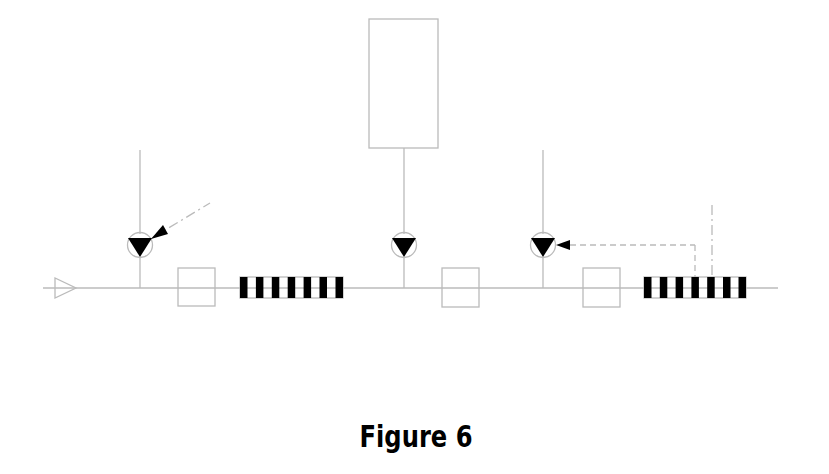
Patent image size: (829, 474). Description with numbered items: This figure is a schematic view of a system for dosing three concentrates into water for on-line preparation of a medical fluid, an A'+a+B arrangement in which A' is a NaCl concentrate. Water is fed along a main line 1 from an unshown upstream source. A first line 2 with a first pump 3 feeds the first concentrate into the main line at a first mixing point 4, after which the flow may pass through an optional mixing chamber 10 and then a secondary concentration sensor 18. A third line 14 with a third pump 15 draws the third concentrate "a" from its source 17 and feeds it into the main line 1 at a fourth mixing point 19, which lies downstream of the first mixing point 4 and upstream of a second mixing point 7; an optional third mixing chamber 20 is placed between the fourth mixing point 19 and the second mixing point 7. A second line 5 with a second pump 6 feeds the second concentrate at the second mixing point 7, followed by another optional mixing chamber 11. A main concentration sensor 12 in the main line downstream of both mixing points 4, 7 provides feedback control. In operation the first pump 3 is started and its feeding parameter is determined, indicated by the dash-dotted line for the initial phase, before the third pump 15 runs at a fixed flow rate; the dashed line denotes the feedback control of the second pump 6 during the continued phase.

The main line 1 is at (101, 288).
The first line 2 is at (140, 182).
The first pump 3 is at (129, 237).
The first mixing point 4 is at (140, 289).
The second line 5 is at (543, 182).
The second pump 6 is at (553, 233).
The second mixing point 7 is at (543, 290).
The mixing chamber 10 is at (193, 306).
The mixing chamber 11 is at (597, 307).
The main concentration sensor 12 is at (688, 298).
The third line 14 is at (404, 182).
The third pump 15 is at (393, 237).
The source for the third concentrate 17 is at (369, 89).
The secondary concentration sensor 18 is at (283, 298).
The fourth mixing point 19 is at (403, 290).
The third mixing chamber 20 is at (457, 307).